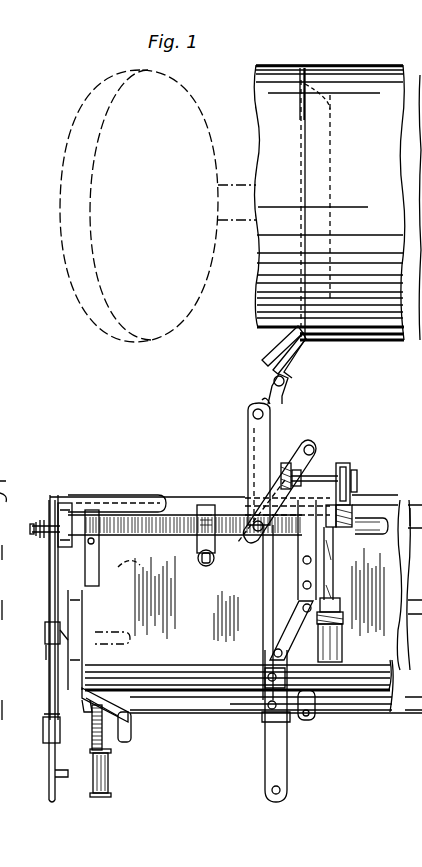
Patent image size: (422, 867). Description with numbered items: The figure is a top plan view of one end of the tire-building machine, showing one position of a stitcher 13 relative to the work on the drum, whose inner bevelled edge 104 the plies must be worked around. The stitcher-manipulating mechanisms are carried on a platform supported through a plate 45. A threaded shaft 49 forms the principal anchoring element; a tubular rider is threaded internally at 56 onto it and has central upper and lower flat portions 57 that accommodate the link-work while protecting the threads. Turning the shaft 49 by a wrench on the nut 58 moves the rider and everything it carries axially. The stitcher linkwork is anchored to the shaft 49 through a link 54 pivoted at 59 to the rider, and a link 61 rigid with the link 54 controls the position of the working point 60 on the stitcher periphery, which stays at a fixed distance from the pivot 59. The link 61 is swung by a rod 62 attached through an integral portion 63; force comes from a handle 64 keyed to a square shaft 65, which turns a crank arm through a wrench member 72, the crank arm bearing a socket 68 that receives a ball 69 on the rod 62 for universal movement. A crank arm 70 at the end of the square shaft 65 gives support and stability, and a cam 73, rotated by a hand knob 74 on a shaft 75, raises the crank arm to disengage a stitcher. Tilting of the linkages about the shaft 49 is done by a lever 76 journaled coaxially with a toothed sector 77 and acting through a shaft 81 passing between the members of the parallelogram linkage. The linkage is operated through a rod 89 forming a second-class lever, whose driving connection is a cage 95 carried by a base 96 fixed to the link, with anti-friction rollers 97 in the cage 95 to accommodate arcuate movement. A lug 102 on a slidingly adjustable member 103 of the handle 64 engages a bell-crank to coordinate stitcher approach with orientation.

The inner bevelled edge 104 is at (330, 110).
The stitcher 13 is at (272, 360).
The working point 60 is at (306, 340).
The flat portions 57 is at (240, 506).
The square shaft 65 is at (133, 484).
The shaft 49 is at (166, 515).
The threaded portion of rider 56 is at (206, 505).
The nut 58 is at (45, 542).
The crank arm 70 is at (70, 545).
The slidingly adjustable member 103 is at (46, 622).
The handle 64 is at (50, 789).
The lug 102 is at (68, 643).
The pivot 59 is at (203, 570).
The link 54 is at (243, 563).
The hand knob 74 is at (283, 464).
The link 61 is at (320, 470).
The cam 73 is at (352, 468).
The shaft 75 is at (346, 465).
The wrench member 72 is at (357, 477).
The socket 68 is at (352, 500).
The ball 69 is at (360, 498).
The rod 62 is at (336, 572).
The portion 63 is at (350, 668).
The shaft 81 is at (200, 650).
The plate 45 is at (346, 707).
The rod 89 is at (163, 700).
The toothed sector 77 is at (92, 743).
The lever 76 is at (108, 768).
The base 96 is at (289, 722).
The anti-friction rollers 97 is at (264, 662).
The cage 95 is at (262, 703).